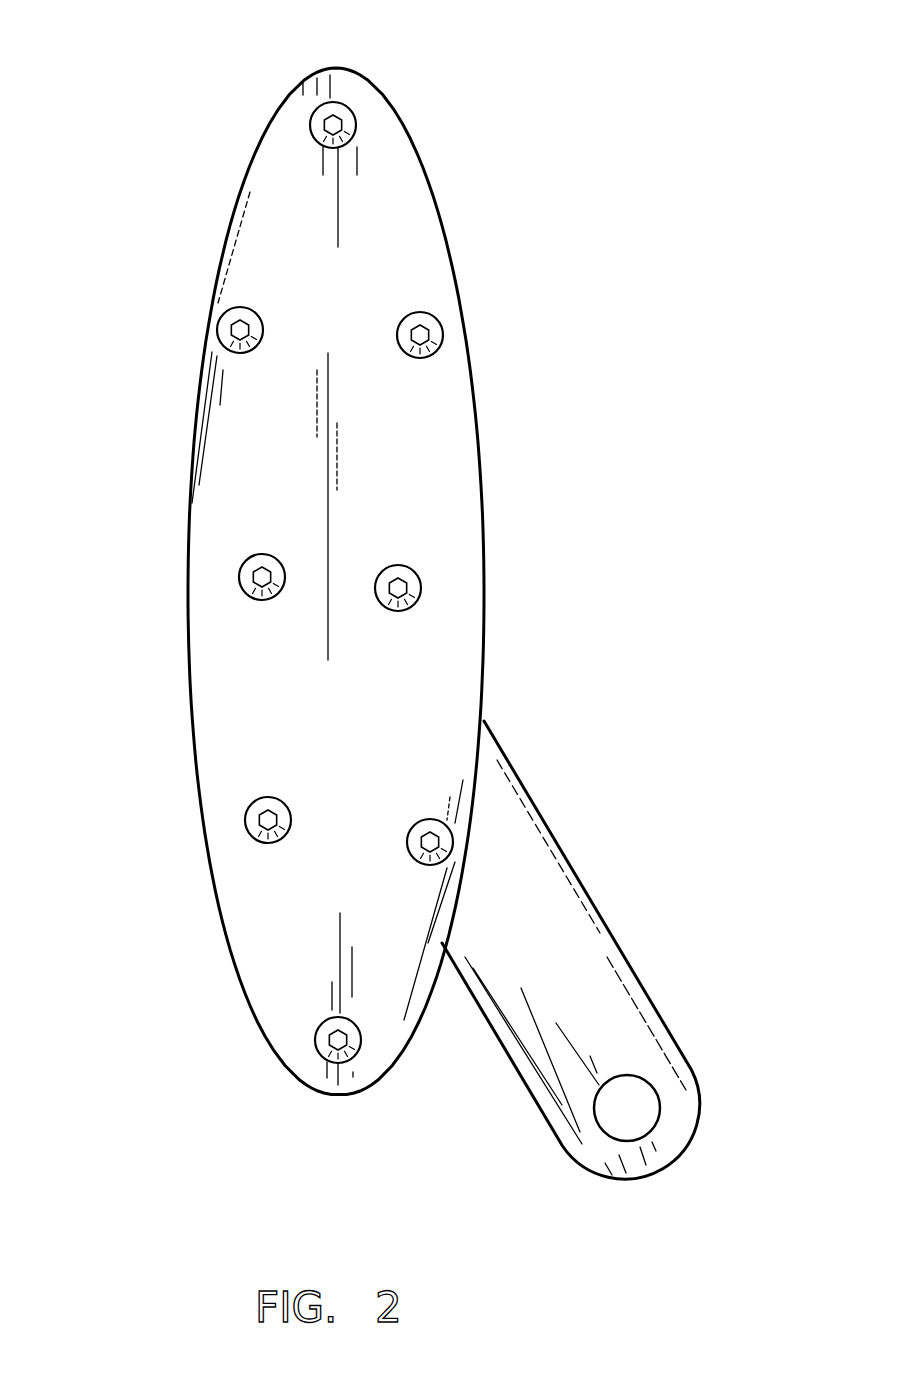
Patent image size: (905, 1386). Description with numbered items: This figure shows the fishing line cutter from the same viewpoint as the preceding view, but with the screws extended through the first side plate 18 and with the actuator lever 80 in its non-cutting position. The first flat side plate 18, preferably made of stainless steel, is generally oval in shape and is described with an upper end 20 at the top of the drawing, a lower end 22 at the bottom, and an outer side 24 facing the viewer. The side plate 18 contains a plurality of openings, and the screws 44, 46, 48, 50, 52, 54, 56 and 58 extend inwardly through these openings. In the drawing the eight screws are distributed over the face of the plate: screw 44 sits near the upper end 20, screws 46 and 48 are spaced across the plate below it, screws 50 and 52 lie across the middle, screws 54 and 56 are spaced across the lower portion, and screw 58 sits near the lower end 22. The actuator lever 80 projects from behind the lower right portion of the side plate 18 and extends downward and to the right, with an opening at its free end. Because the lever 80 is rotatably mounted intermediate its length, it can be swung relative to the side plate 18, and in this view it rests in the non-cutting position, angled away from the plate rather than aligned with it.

The first flat side plate 18 is at (486, 457).
The upper end 20 is at (347, 61).
The lower end 22 is at (331, 1112).
The outer side 24 is at (350, 753).
The screw 44 is at (352, 121).
The screw 46 is at (224, 324).
The screw 48 is at (430, 328).
The screw 50 is at (245, 576).
The screw 52 is at (414, 587).
The screw 54 is at (254, 820).
The screw 56 is at (440, 830).
The screw 58 is at (330, 1040).
The actuator lever 80 is at (552, 901).